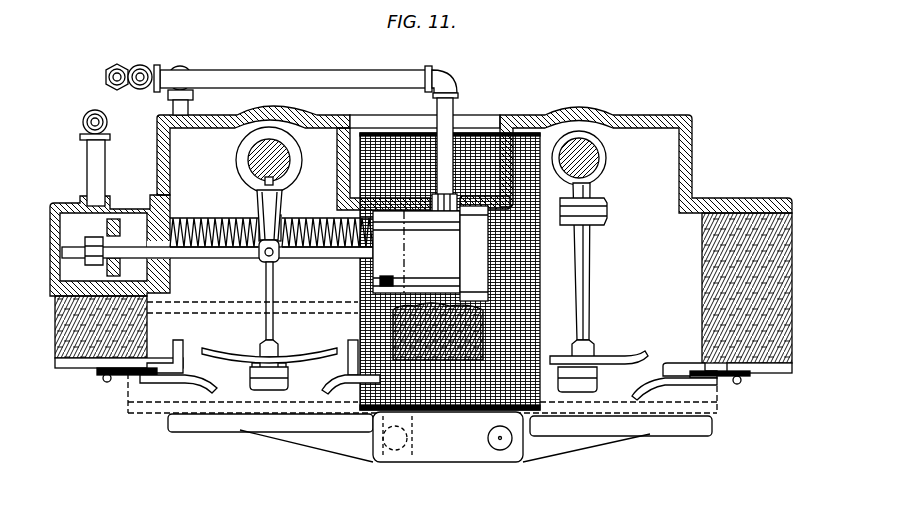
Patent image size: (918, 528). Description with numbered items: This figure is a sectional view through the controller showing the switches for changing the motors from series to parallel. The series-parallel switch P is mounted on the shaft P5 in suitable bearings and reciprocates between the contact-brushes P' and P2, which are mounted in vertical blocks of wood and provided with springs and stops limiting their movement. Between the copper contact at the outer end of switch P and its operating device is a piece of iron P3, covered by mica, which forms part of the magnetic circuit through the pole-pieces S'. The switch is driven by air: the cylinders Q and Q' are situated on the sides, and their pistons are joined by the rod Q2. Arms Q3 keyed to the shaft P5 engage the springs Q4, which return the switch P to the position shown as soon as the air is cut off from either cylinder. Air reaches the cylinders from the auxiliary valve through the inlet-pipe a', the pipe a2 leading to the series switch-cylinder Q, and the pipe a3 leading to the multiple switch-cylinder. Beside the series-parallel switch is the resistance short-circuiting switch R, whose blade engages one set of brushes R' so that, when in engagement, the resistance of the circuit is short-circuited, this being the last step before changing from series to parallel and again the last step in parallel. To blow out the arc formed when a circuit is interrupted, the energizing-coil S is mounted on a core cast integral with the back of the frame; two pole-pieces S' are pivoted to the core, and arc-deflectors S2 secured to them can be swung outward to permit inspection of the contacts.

The inlet-pipe a' is at (110, 73).
The pipe to multiple switch-cylinder a3 is at (280, 78).
The pipe to series switch-cylinder a2 is at (92, 160).
The shaft P5 is at (270, 160).
The series-parallel switch P is at (272, 242).
The piece of iron P3 is at (313, 352).
The contact-brush P2 is at (190, 377).
The contact-brush P' is at (351, 357).
The series switch-cylinder Q is at (96, 245).
The multiple switch-cylinder Q' is at (430, 253).
The rod Q2 is at (205, 250).
The arms Q3 is at (281, 208).
The springs Q4 is at (212, 226).
The energizing-coil S is at (460, 271).
The resistance short-circuiting switch R is at (599, 261).
The brushes R' is at (691, 414).
The pole-pieces S' is at (440, 452).
The arc-deflectors S2 is at (128, 413).